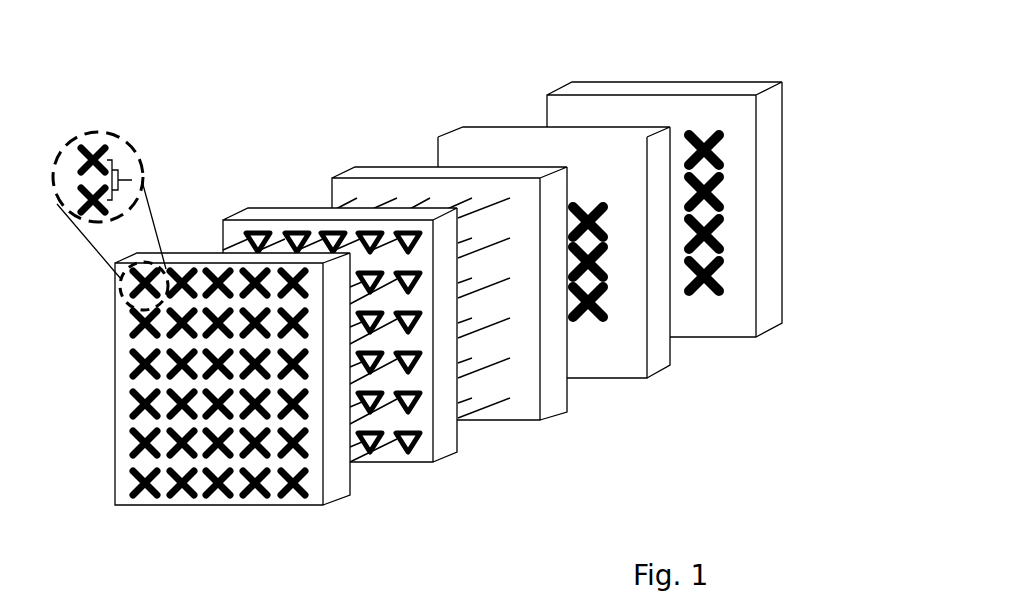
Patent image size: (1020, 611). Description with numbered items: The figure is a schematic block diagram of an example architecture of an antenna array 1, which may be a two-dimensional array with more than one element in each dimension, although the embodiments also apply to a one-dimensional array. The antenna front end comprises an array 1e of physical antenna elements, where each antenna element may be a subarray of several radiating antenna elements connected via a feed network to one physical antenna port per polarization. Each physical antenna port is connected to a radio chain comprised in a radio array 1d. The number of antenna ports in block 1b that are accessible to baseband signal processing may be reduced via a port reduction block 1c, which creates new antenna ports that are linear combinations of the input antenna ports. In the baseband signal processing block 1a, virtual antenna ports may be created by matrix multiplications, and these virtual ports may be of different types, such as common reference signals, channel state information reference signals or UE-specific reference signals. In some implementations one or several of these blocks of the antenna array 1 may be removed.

The antenna array 1 is at (158, 45).
The baseband signal processing block 1a is at (658, 92).
The block of antenna ports accessible to baseband 1b is at (483, 137).
The port reduction block 1c is at (388, 172).
The radio array 1d is at (303, 217).
The array of physical antenna elements 1e is at (214, 262).